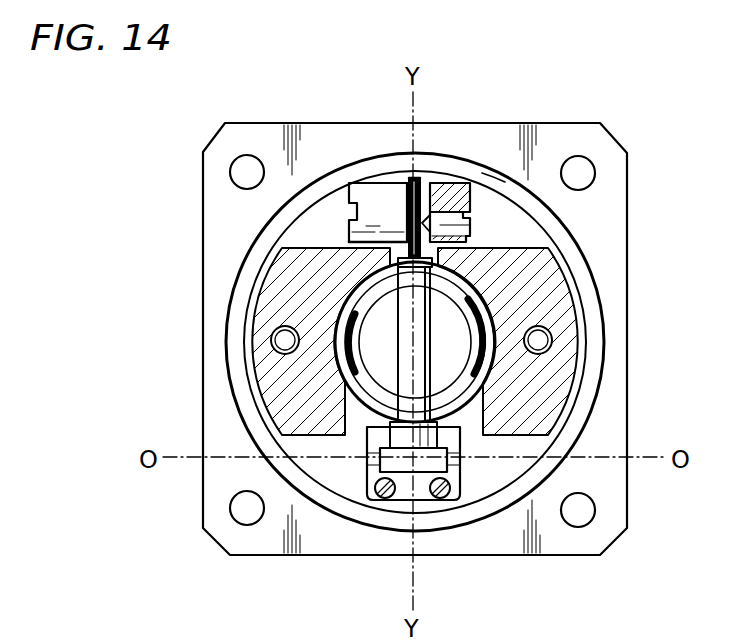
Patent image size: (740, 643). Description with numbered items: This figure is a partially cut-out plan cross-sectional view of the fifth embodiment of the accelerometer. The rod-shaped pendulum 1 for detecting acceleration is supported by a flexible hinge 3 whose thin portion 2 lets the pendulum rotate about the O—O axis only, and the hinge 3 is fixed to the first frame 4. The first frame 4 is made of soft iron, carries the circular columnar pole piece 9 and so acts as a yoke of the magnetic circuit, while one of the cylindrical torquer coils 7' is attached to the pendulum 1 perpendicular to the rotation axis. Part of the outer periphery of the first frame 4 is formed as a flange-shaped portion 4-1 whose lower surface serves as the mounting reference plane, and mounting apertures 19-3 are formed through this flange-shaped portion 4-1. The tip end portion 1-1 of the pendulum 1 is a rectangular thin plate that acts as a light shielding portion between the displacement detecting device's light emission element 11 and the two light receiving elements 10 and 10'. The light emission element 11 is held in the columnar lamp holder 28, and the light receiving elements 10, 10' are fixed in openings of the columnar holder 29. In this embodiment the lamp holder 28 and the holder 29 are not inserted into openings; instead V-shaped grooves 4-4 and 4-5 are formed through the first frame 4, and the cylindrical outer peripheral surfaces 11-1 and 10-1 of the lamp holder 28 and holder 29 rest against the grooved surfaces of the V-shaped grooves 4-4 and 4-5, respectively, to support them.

The pendulum 1 is at (420, 368).
The tip end portion 1-1 is at (418, 178).
The thin portion 2 is at (462, 462).
The hinge 3 is at (373, 438).
The first frame 4 is at (557, 417).
The flange-shaped portion 4-1 is at (627, 514).
The V-shaped groove 4-4 is at (513, 250).
The V-shaped groove 4-5 is at (290, 246).
The torquer coil 7' is at (512, 329).
The pole piece 9 is at (373, 321).
The light receiving element 10 is at (345, 137).
The light receiving element 10' is at (363, 158).
The cylindrical outer peripheral surface 10-1 is at (350, 240).
The light emission element 11 is at (455, 195).
The cylindrical outer peripheral surface 11-1 is at (443, 222).
The mounting apertures 19-3 is at (243, 155).
The lamp holder 28 is at (493, 180).
The holder 29 is at (409, 188).